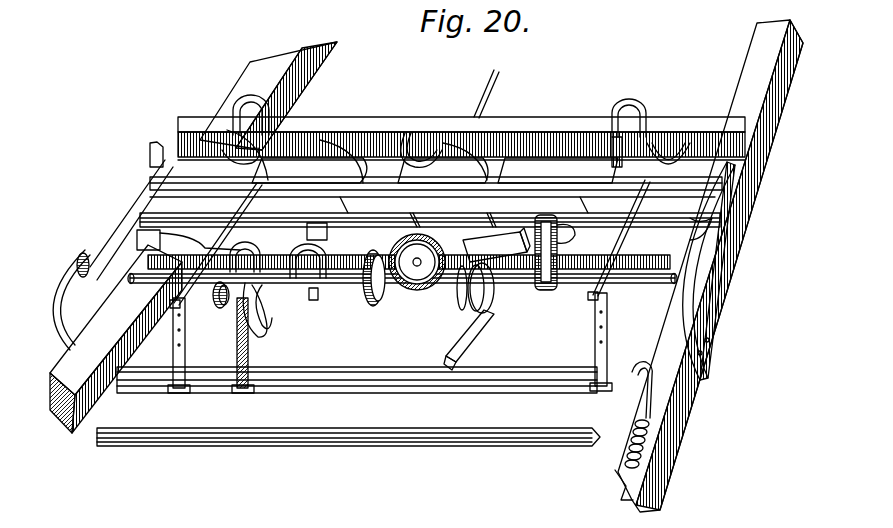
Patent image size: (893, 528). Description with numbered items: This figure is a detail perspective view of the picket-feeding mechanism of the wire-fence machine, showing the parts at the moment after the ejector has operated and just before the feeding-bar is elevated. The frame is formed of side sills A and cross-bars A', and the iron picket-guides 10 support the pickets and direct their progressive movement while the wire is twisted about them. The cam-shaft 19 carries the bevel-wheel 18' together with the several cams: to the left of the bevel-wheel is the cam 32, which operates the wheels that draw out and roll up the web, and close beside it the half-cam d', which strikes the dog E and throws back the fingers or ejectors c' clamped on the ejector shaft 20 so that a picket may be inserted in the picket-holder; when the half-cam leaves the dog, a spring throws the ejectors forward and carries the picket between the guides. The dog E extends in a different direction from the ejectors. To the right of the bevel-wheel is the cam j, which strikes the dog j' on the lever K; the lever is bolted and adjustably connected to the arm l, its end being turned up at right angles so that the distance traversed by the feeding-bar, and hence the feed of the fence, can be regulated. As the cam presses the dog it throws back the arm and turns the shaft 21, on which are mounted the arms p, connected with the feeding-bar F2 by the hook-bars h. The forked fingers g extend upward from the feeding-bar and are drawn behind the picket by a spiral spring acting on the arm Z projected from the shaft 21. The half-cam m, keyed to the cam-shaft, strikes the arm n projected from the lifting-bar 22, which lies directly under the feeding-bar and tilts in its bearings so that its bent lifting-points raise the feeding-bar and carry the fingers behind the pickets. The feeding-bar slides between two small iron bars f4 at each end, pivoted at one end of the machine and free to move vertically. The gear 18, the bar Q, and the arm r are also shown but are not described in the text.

The side sills A is at (426, 266).
The cross-bars A' is at (461, 126).
The picket-guides 10 is at (232, 120).
The finger or ejector shaft 20 is at (618, 110).
The forked fingers g is at (413, 133).
The fingers or ejectors c' is at (370, 170).
The feeding-bar F2 is at (558, 170).
The small bars of iron f4 is at (120, 212).
The diagonal bar Q is at (128, 230).
The lifting-bar 22 is at (431, 223).
The arm n is at (278, 247).
The dog E is at (559, 252).
The hook-bars h is at (184, 302).
The half-cam m is at (218, 308).
The dog j' is at (268, 307).
The cam j is at (308, 287).
The bevel-wheel 18' is at (382, 290).
The gear wheel 18 is at (417, 274).
The half-cam d' is at (486, 288).
The cam 32 is at (486, 306).
The arm r is at (459, 350).
The arms p is at (178, 338).
The arm l is at (237, 350).
The lever K is at (252, 333).
The cam-shaft 19 is at (650, 290).
The shaft 21 is at (500, 380).
The arm Z is at (630, 395).